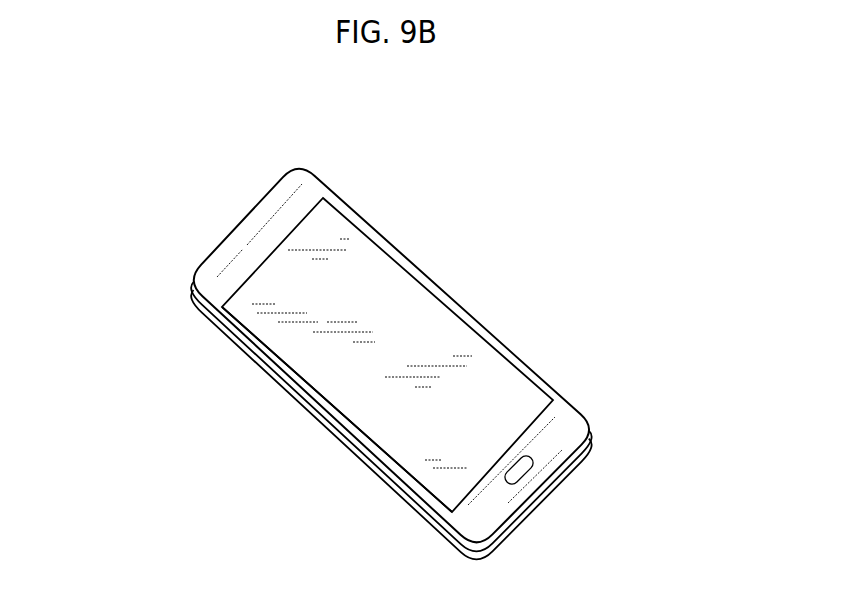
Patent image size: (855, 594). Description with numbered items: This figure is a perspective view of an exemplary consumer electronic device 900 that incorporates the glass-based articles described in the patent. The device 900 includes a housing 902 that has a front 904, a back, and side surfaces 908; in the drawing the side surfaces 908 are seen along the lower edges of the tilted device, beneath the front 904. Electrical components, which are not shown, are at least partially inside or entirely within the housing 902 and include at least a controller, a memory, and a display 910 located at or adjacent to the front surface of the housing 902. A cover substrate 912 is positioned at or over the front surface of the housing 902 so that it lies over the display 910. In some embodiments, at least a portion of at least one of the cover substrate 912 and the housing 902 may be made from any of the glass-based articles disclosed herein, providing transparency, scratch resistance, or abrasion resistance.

The consumer electronic device 900 is at (222, 193).
The housing 902 is at (313, 190).
The front surface 904 is at (564, 428).
The side surfaces 908 is at (258, 360).
The display 910 is at (362, 270).
The cover substrate 912 is at (412, 433).